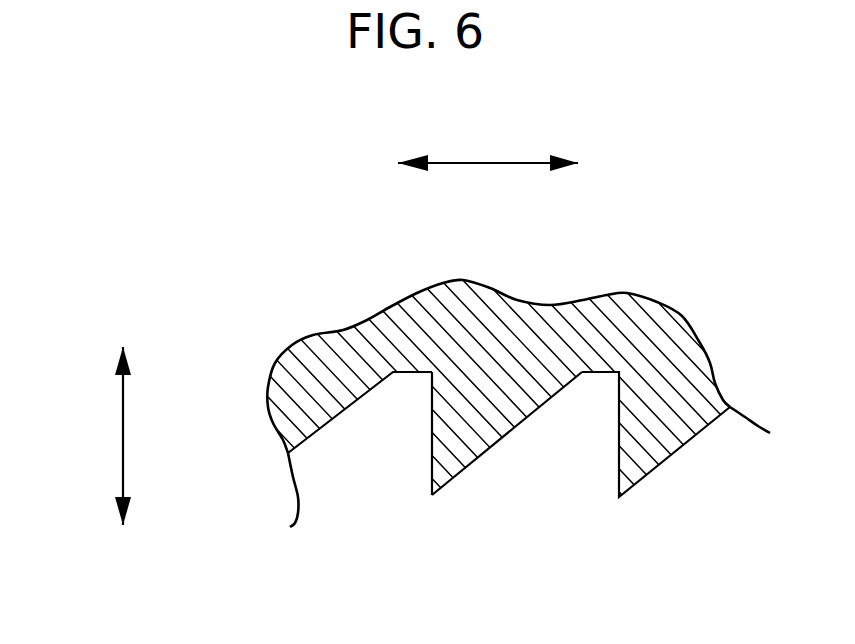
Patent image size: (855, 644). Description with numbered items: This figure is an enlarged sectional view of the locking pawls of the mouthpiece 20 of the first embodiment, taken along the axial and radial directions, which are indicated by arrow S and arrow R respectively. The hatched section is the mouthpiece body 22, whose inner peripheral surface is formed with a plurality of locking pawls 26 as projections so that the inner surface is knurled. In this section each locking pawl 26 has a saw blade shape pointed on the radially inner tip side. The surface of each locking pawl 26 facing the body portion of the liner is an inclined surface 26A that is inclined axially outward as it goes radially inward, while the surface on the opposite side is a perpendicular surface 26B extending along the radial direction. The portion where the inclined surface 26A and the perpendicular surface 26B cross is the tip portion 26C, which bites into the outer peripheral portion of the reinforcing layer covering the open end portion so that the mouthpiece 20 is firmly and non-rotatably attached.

The mouthpiece 20 is at (512, 399).
The mouthpiece body 22 is at (603, 310).
The locking pawl 26 is at (509, 486).
The inclined surface 26A is at (465, 468).
The perpendicular surface 26B is at (430, 438).
The tip portion 26C is at (432, 496).
The arrow S is at (490, 162).
The arrow R is at (122, 443).